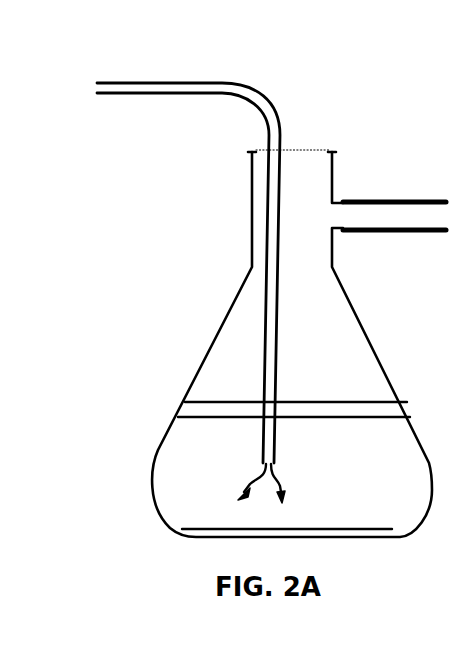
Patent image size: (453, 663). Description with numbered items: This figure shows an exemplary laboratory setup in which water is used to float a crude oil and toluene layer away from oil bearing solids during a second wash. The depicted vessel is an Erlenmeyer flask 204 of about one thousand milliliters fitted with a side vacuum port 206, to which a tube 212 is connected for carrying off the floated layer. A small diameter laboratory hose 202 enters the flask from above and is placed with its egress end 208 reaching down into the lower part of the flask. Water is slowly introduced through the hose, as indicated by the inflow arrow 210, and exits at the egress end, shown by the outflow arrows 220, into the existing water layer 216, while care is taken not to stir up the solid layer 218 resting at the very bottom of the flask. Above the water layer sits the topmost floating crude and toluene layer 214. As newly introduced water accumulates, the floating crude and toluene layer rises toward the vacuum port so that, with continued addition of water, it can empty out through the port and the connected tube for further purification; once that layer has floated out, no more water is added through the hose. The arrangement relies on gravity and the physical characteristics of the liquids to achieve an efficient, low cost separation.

The gas inlet tube 202 is at (168, 84).
The flask 204 is at (380, 535).
The side outlet tube 206 is at (368, 217).
The outlet tube wall 208 is at (405, 232).
The gas inflow 210 is at (86, 87).
The outlet connection 212 is at (452, 80).
The liquid surface 214 is at (375, 410).
The liquid 216 is at (372, 448).
The flask wall 218 is at (408, 360).
The gas bubbles 220 is at (261, 490).